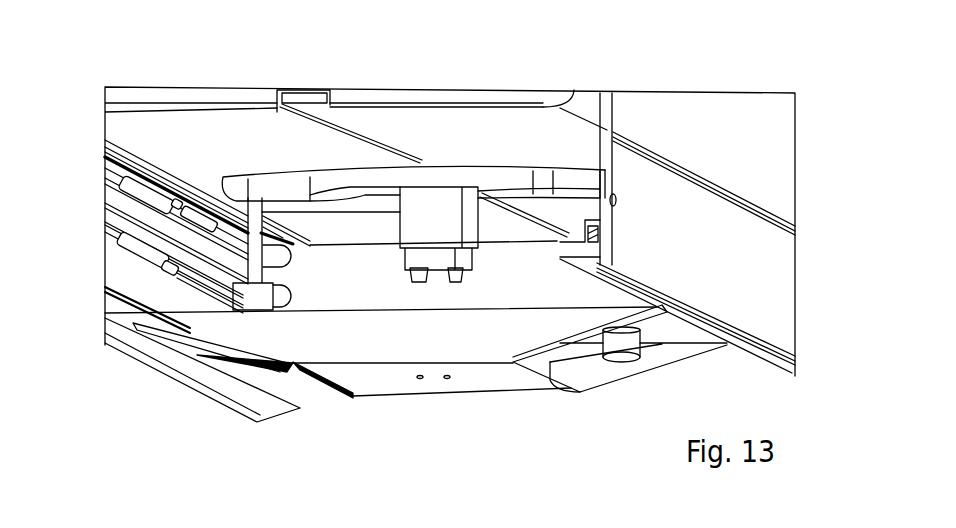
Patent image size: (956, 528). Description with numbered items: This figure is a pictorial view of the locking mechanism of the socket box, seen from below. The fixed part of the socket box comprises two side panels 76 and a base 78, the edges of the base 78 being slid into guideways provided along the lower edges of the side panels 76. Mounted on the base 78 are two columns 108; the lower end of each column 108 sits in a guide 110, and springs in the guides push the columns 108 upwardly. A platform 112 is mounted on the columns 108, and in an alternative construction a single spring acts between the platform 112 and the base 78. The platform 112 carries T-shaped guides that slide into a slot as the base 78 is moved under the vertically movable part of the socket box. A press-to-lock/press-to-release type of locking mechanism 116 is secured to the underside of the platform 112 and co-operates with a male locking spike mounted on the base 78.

The side panel 76 is at (742, 286).
The base 78 is at (367, 420).
The column 108 is at (255, 258).
The guide 110 is at (250, 302).
The platform 112 is at (365, 178).
The locking mechanism 116 is at (445, 217).